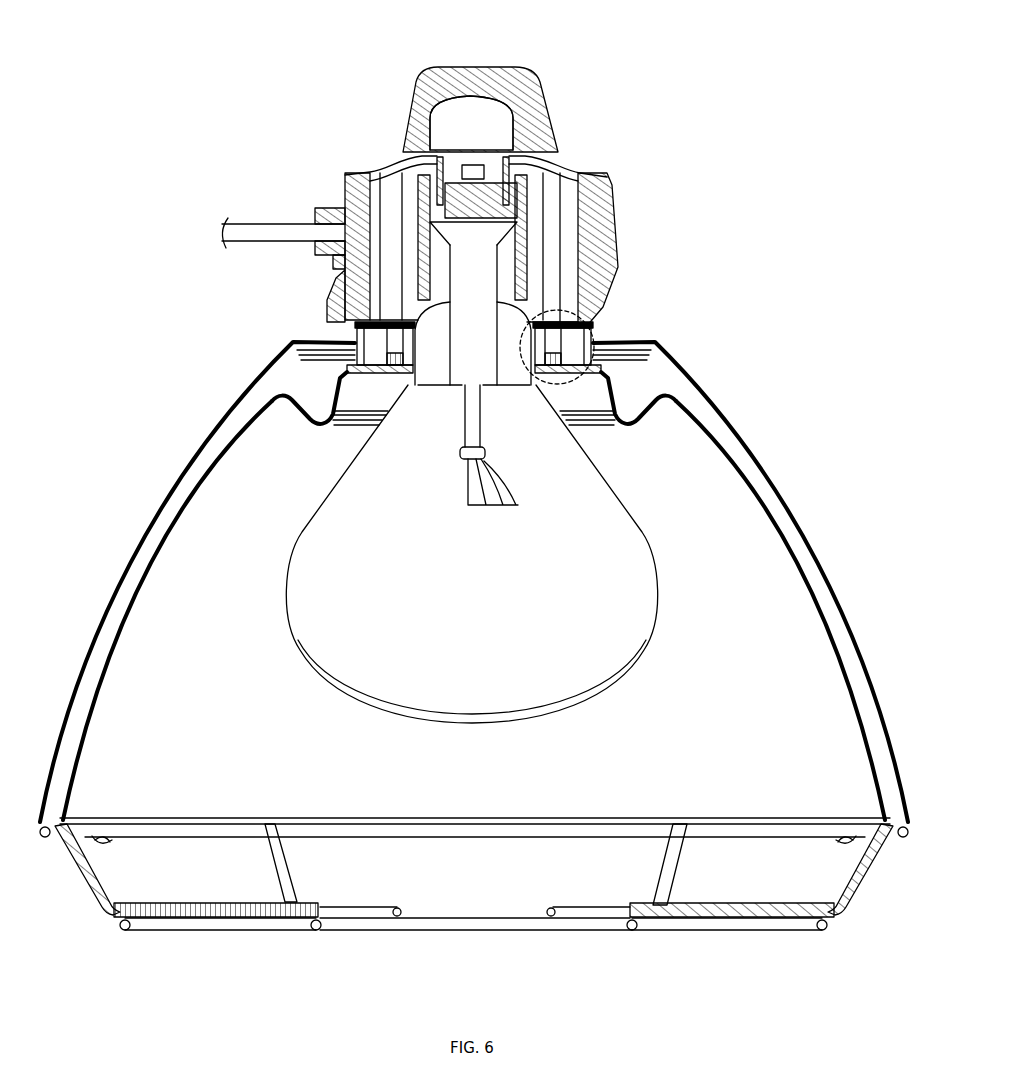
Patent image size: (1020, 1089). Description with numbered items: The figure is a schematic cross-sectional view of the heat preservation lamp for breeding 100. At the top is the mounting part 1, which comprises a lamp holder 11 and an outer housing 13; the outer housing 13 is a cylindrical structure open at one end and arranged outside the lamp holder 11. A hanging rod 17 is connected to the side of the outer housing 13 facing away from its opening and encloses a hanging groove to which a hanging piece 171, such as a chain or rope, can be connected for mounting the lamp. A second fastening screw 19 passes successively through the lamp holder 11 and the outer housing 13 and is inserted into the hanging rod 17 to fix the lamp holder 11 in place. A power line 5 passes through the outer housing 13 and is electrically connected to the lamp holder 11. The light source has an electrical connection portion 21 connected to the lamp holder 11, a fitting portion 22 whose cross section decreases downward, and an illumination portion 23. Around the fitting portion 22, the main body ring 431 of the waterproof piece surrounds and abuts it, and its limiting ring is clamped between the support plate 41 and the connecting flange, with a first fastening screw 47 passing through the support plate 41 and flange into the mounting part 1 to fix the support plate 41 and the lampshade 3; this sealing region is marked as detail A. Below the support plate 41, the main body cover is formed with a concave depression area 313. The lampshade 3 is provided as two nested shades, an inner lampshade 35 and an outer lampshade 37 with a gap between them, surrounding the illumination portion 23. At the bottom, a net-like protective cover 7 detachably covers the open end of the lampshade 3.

The heat preservation lamp for breeding 100 is at (489, 31).
The mounting part 1 is at (672, 234).
The hanging rod 17 is at (413, 87).
The hanging piece 171 is at (502, 128).
The second fastening screw 19 is at (558, 154).
The outer housing 13 is at (626, 270).
The lamp holder 11 is at (497, 240).
The electrical connection portion 21 is at (432, 262).
The power line 5 is at (268, 230).
The fitting portion 22 is at (356, 327).
The support plate 41 is at (352, 343).
The first fastening screw 47 is at (592, 333).
The main body ring 431 is at (594, 344).
The detail region A is at (626, 360).
The illumination portion 23 is at (343, 462).
The lampshade 3 is at (474, 665).
The inner lampshade 35 is at (158, 551).
The outer lampshade 37 is at (192, 474).
The depression area 313 is at (320, 408).
The protective cover 7 is at (368, 925).